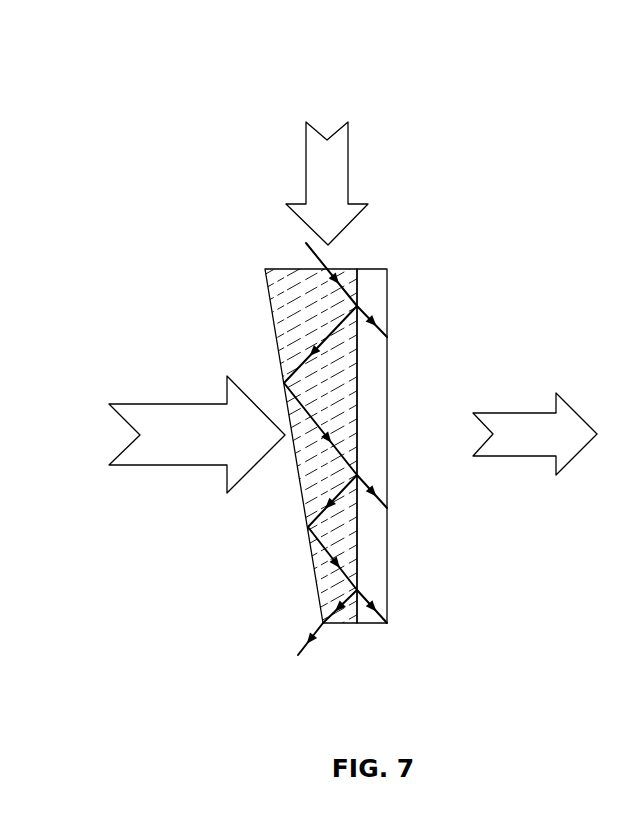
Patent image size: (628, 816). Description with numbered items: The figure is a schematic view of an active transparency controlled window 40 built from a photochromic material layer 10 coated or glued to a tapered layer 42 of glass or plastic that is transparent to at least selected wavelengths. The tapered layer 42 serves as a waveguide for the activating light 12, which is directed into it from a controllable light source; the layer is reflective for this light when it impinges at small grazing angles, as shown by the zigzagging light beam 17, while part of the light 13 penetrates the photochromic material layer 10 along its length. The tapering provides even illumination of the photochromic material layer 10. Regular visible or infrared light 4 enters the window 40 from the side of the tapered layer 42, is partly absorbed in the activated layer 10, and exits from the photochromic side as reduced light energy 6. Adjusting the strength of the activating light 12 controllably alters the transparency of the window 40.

The impinging light 4 is at (155, 404).
The reduced light energy 6 is at (498, 413).
The photochromic material layer 10 is at (371, 625).
The activating light 12 is at (348, 149).
The light penetrating the photochromic material layer 13 is at (387, 337).
The light beam 17 is at (322, 627).
The active transparency controlled window 40 is at (510, 189).
The tapered layer 42 is at (315, 581).